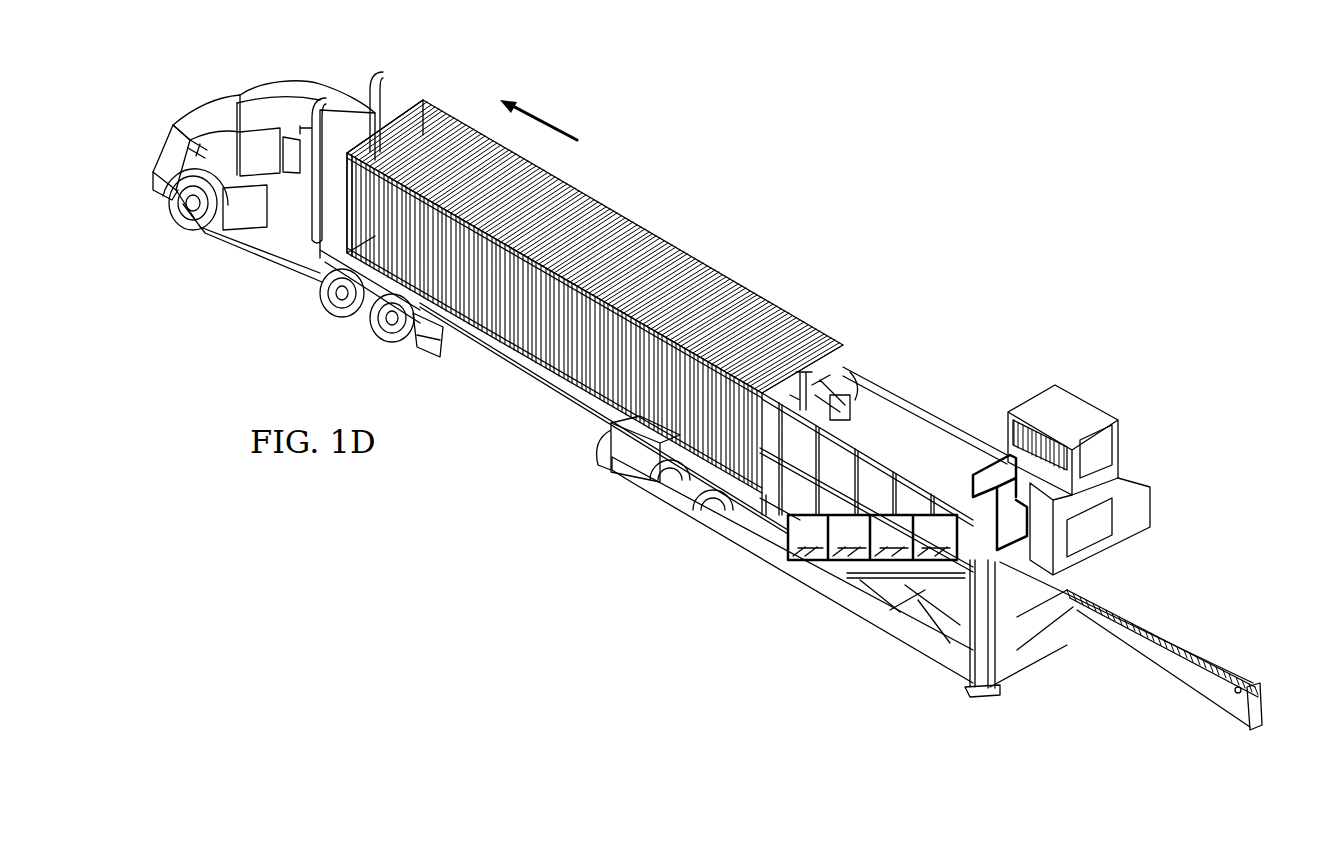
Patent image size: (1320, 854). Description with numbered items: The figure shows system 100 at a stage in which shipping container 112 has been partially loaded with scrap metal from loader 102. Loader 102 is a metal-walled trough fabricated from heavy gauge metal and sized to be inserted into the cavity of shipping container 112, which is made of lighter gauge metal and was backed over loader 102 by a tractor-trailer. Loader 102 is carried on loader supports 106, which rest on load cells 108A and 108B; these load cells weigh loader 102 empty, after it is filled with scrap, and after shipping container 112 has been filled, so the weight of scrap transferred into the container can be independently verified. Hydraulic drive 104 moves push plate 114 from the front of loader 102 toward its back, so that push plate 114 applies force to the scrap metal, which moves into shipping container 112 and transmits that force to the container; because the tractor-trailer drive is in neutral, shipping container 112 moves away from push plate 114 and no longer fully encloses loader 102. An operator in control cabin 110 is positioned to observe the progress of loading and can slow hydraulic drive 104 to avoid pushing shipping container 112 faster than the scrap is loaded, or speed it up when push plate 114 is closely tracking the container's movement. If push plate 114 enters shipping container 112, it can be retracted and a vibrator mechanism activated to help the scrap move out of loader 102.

The system 100 is at (882, 100).
The loader 102 is at (940, 420).
The hydraulic drive 104 is at (1128, 664).
The loader supports 106 is at (782, 570).
The load cell 108A is at (612, 470).
The load cell 108B is at (980, 690).
The control cabin 110 is at (1088, 402).
The shipping container 112 is at (633, 223).
The push plate 114 is at (853, 365).